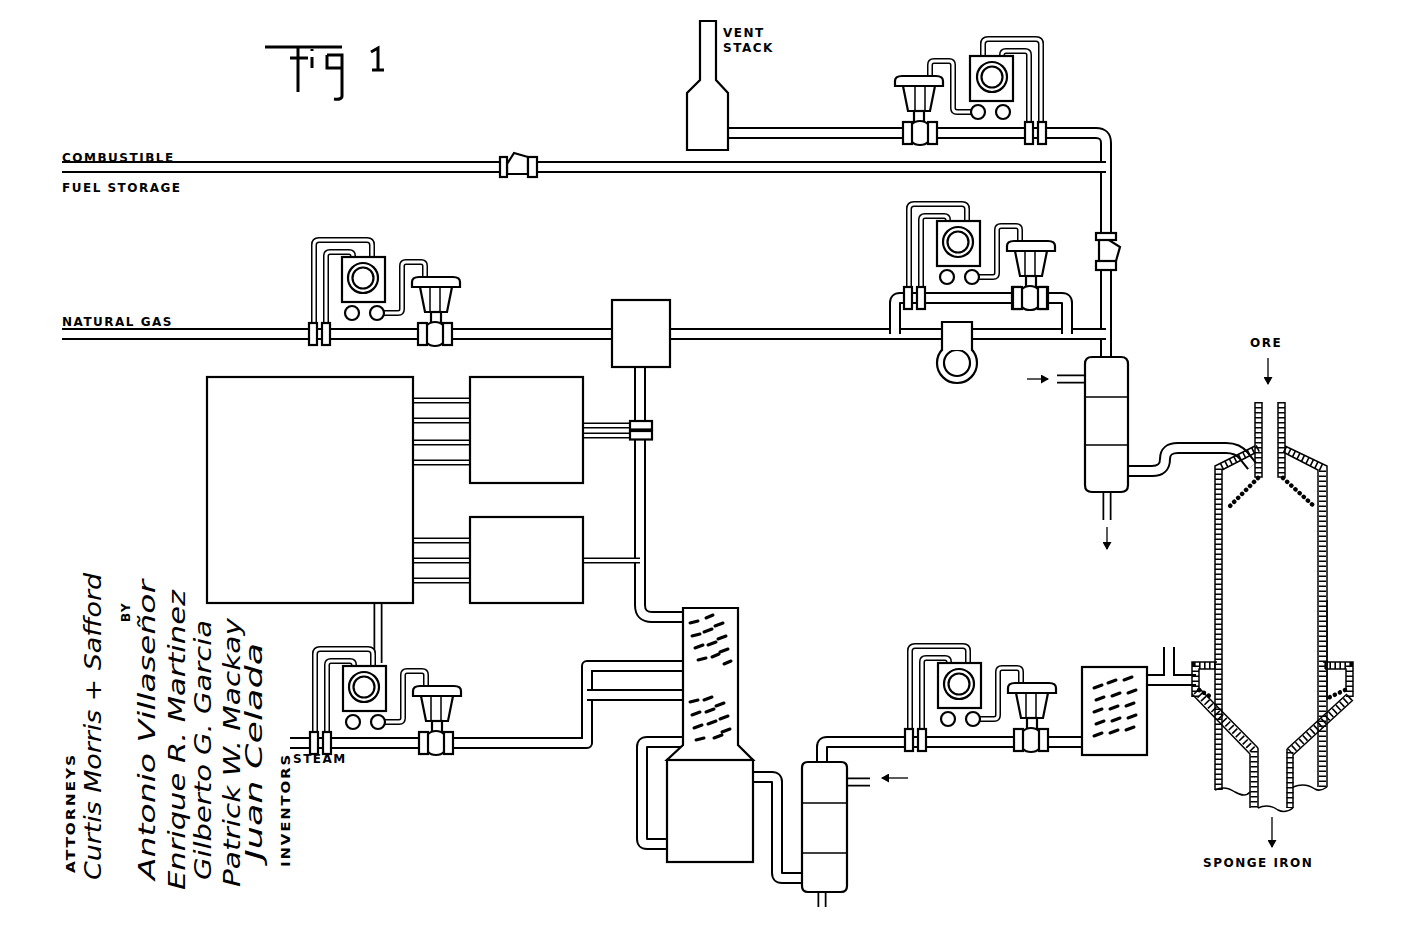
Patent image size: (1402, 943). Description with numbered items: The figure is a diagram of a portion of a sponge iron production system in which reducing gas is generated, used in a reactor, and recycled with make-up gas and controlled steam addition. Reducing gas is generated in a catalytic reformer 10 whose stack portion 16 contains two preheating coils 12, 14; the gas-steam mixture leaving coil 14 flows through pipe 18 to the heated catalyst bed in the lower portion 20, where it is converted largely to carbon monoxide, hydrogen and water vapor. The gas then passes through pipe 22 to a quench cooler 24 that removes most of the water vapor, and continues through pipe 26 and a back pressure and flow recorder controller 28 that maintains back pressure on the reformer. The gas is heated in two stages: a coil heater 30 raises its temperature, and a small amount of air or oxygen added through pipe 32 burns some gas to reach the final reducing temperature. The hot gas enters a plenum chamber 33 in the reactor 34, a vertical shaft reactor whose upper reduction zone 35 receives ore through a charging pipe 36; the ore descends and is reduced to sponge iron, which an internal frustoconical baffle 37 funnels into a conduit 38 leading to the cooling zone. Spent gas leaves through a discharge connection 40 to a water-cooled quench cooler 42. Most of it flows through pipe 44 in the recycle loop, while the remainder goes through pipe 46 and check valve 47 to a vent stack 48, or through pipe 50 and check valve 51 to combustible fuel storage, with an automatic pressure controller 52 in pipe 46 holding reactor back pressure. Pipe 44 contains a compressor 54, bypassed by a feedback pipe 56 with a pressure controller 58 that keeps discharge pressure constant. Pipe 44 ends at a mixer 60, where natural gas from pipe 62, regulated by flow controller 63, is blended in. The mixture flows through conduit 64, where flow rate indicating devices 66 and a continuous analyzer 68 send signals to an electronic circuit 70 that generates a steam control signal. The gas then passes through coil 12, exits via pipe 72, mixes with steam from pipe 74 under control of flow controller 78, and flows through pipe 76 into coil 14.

The catalytic reformer 10 is at (735, 665).
The coil 12 is at (710, 625).
The coil 14 is at (728, 727).
The stack portion 16 is at (738, 682).
The pipe 18 is at (637, 790).
The lower portion 20 is at (714, 818).
The pipe 22 is at (771, 862).
The quench cooler 24 is at (847, 823).
The pipe 26 is at (842, 737).
The back pressure and flow recorder controller 28 is at (975, 645).
The coil heater 30 is at (1110, 757).
The pipe 32 is at (1162, 655).
The plenum chamber 33 is at (1198, 700).
The reactor 34 is at (1327, 615).
The reduction zone 35 is at (1267, 606).
The charging pipe 36 is at (1283, 420).
The internal frustoconical baffle 37 is at (1240, 733).
The conduit 38 is at (1293, 807).
The discharge connection 40 is at (1183, 443).
The quench cooler 42 is at (1083, 417).
The pipe 44 is at (765, 333).
The pipe 46 is at (1100, 128).
The check valve 47 is at (1113, 255).
The vent stack 48 is at (690, 93).
The pipe 50 is at (322, 165).
The check valve 51 is at (517, 155).
The automatic pressure controller 52 is at (955, 52).
The compressor 54 is at (938, 368).
The feedback pipe 56 is at (975, 305).
The pressure controller 58 is at (983, 207).
The mixer 60 is at (648, 345).
The pipe 62 is at (515, 328).
The flow controller 63 is at (398, 242).
The conduit 64 is at (645, 503).
The flow rate indicating devices 66 is at (526, 436).
The continuous analyzer 68 is at (526, 570).
The electronic circuit 70 is at (308, 497).
The pipe 72 is at (627, 662).
The pipe 74 is at (498, 737).
The pipe 76 is at (623, 702).
The flow controller 78 is at (402, 652).